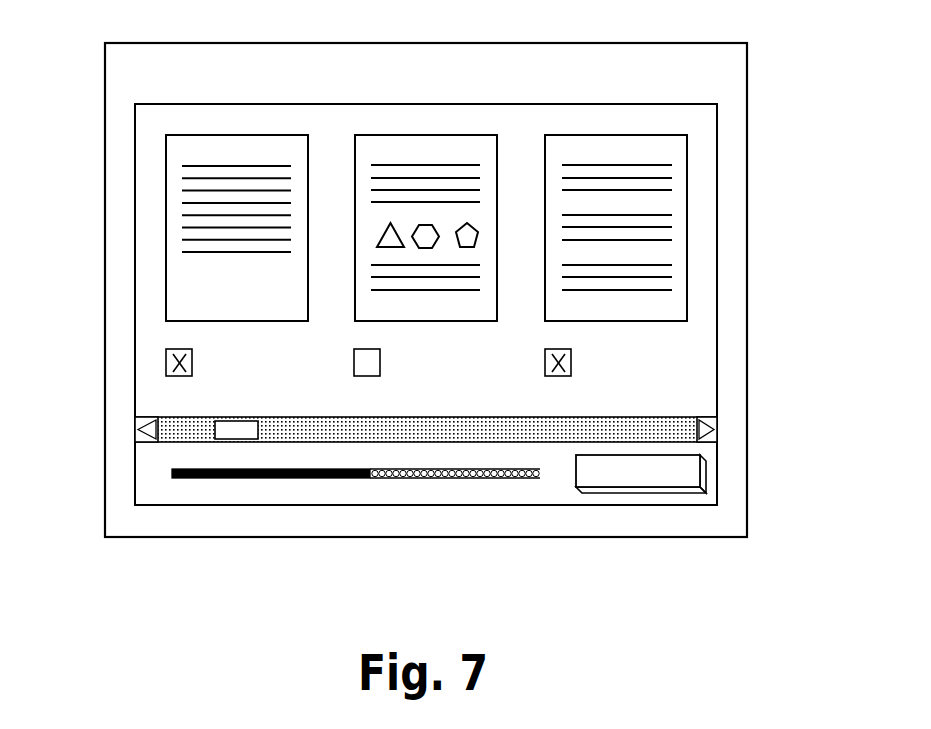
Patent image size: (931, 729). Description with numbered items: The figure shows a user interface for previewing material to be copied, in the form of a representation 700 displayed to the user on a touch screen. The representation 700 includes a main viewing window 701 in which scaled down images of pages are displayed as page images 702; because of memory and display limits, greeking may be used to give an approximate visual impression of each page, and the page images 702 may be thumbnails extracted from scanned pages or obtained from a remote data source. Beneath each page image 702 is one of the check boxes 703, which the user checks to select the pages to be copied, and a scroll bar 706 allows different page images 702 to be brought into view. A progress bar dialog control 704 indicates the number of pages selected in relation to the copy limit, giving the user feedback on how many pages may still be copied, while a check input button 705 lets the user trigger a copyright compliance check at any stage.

The representation 700 is at (725, 80).
The main viewing window 701 is at (135, 200).
The page images 702 is at (207, 321).
The check boxes 703 is at (166, 362).
The progress bar dialog control 704 is at (520, 479).
The check input button 705 is at (637, 493).
The scroll bar 706 is at (697, 422).